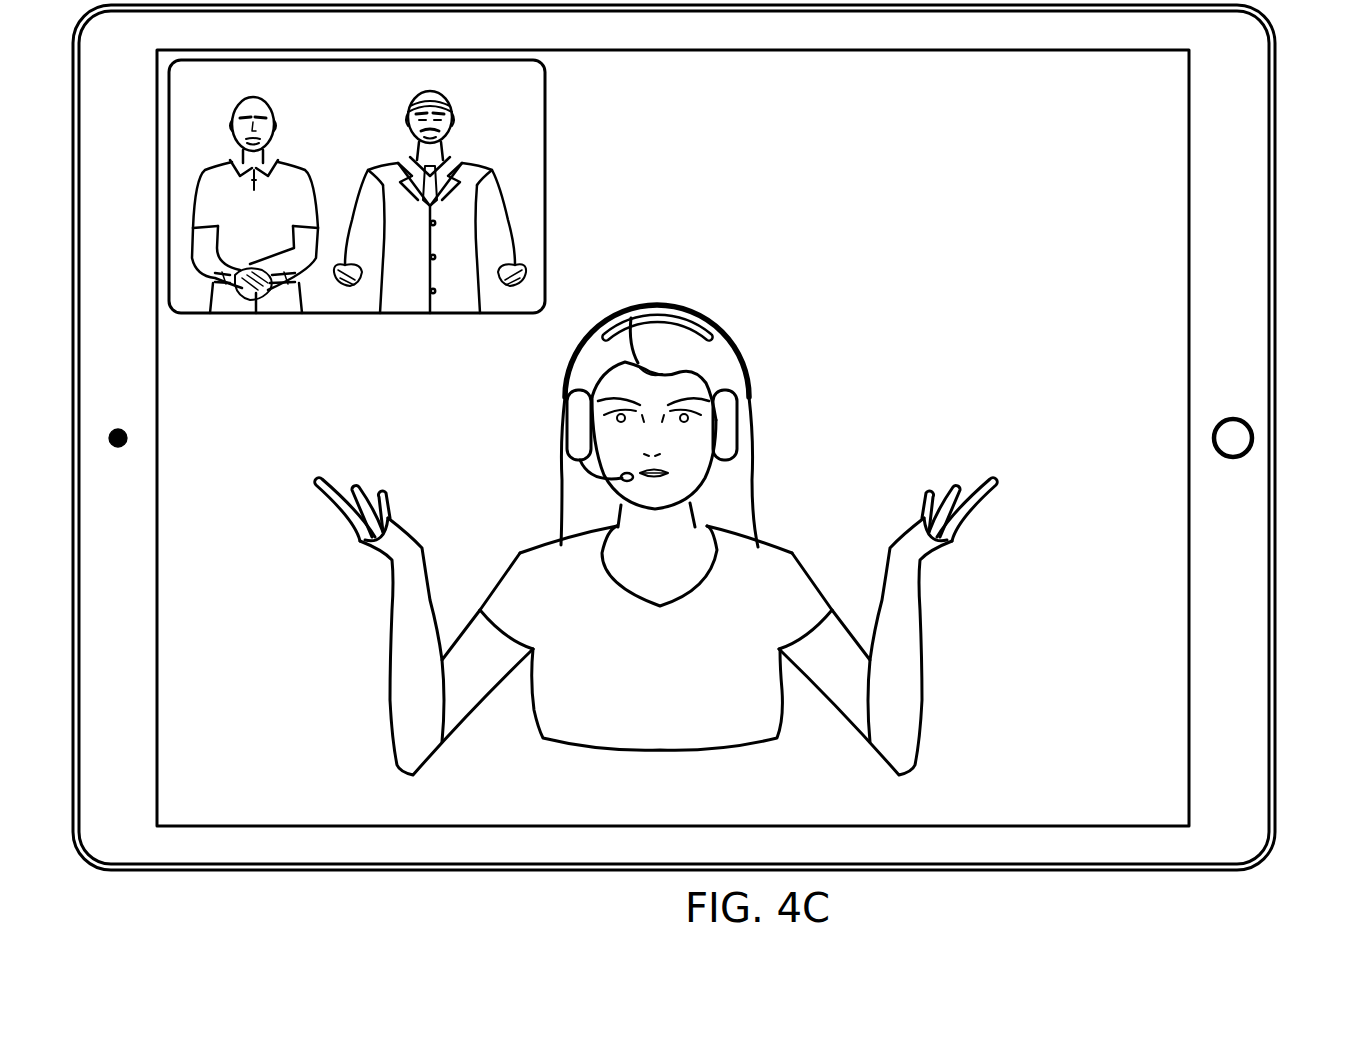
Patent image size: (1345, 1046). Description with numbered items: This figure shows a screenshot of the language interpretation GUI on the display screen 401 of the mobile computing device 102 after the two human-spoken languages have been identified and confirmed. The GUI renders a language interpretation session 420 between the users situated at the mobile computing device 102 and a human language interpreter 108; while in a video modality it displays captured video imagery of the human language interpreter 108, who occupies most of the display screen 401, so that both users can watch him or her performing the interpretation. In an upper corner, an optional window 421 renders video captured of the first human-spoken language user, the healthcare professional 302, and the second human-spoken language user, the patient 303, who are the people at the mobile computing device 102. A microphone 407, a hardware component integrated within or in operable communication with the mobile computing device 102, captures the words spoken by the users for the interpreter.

The mobile computing device 102 is at (1276, 128).
The human language interpreter 108 is at (778, 550).
The healthcare professional 302 is at (453, 148).
The patient 303 is at (276, 153).
The display screen 401 is at (1196, 262).
The microphone 407 is at (119, 447).
The language interpretation session 420 is at (1063, 169).
The window 421 is at (547, 178).